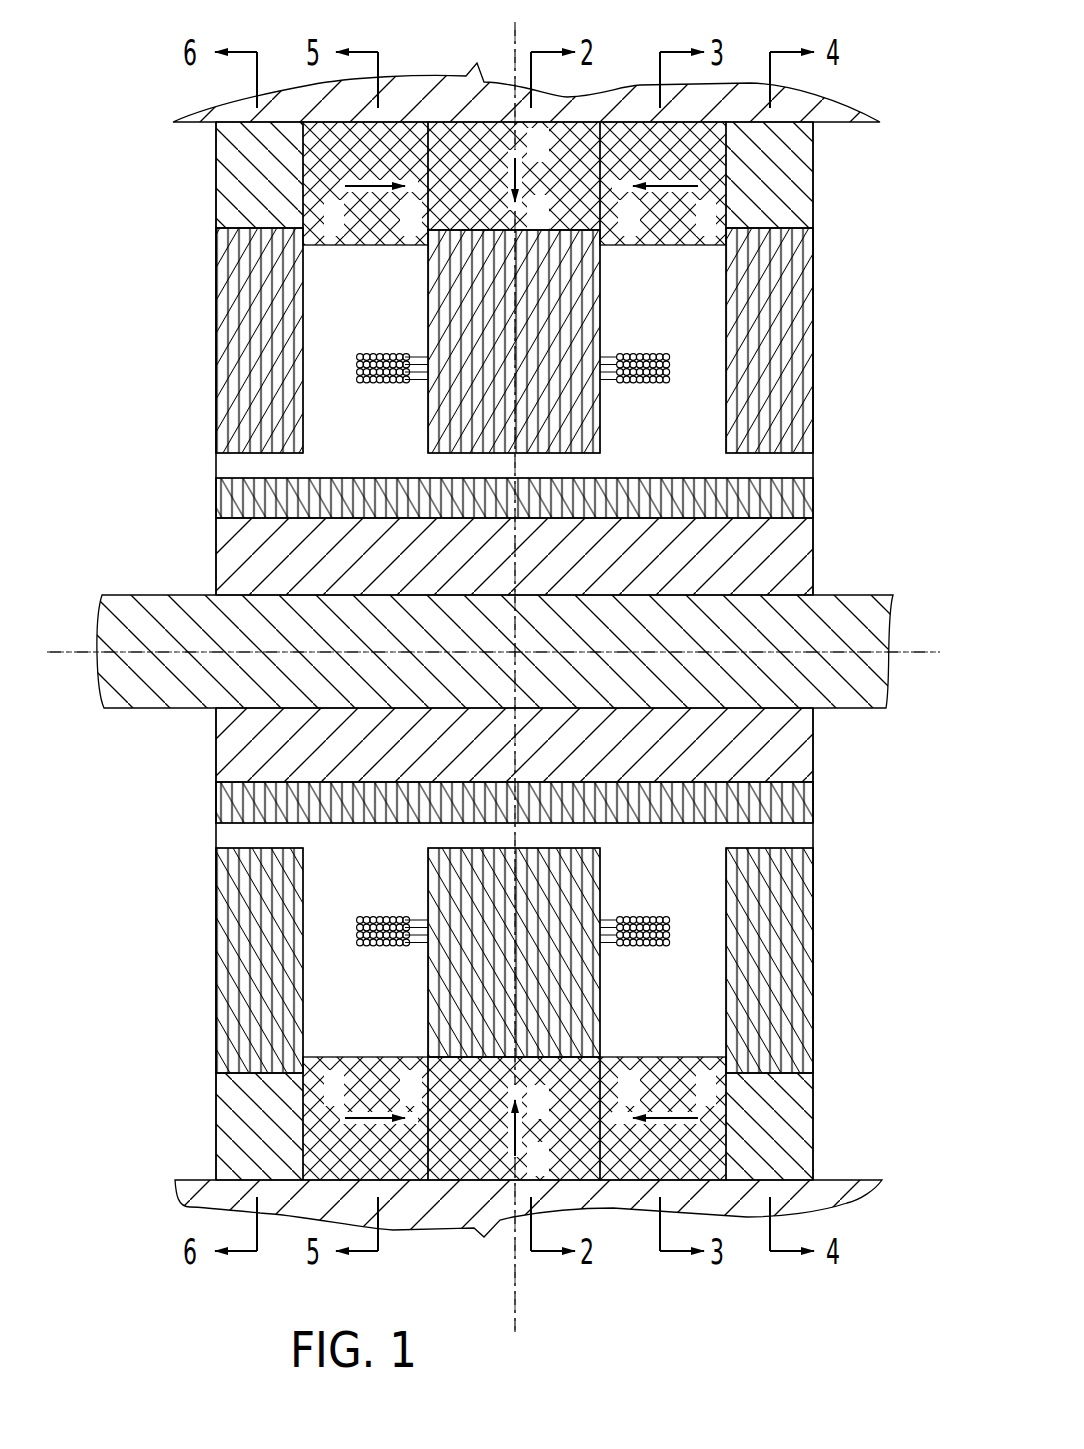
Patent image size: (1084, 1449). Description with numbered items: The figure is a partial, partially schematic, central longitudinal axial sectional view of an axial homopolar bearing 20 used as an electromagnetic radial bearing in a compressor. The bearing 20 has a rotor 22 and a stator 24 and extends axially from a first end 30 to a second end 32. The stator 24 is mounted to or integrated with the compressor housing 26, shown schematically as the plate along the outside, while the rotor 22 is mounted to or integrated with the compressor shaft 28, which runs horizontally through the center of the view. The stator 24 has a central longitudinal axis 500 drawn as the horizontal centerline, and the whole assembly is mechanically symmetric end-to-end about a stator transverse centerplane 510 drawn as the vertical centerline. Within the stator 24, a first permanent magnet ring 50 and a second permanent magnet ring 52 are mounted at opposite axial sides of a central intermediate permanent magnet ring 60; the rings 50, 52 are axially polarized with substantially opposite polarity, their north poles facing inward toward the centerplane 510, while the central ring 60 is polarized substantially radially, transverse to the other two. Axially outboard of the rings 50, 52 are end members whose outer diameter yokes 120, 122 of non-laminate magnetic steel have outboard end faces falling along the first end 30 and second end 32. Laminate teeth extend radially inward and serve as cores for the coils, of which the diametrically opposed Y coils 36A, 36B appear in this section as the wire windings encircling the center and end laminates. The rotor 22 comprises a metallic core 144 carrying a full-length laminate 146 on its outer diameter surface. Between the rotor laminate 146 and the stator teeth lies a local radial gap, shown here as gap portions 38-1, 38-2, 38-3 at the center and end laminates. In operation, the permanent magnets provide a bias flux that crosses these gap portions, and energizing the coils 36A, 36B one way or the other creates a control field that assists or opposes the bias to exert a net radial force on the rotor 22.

The axial homopolar bearing 20 is at (98, 152).
The rotor 22 is at (572, 600).
The stator 24 is at (535, 590).
The housing 26 is at (300, 95).
The shaft 28 is at (170, 598).
The first end 30 is at (494, 619).
The second end 32 is at (879, 203).
The Y coil 36A is at (688, 932).
The Y coil 36B is at (688, 356).
The gap portion 38-1 is at (590, 834).
The gap portion 38-2 is at (292, 468).
The gap portion 38-3 is at (733, 468).
The first permanent magnet ring 50 is at (372, 160).
The second permanent magnet ring 52 is at (620, 130).
The central intermediate permanent magnet ring 60 is at (456, 130).
The outer diameter yoke 120 is at (228, 177).
The outer diameter yoke 122 is at (797, 150).
The metallic core 144 is at (790, 568).
The laminate 146 is at (540, 495).
The stator central longitudinal axis 500 is at (63, 652).
The stator transverse centerplane 510 is at (515, 1293).